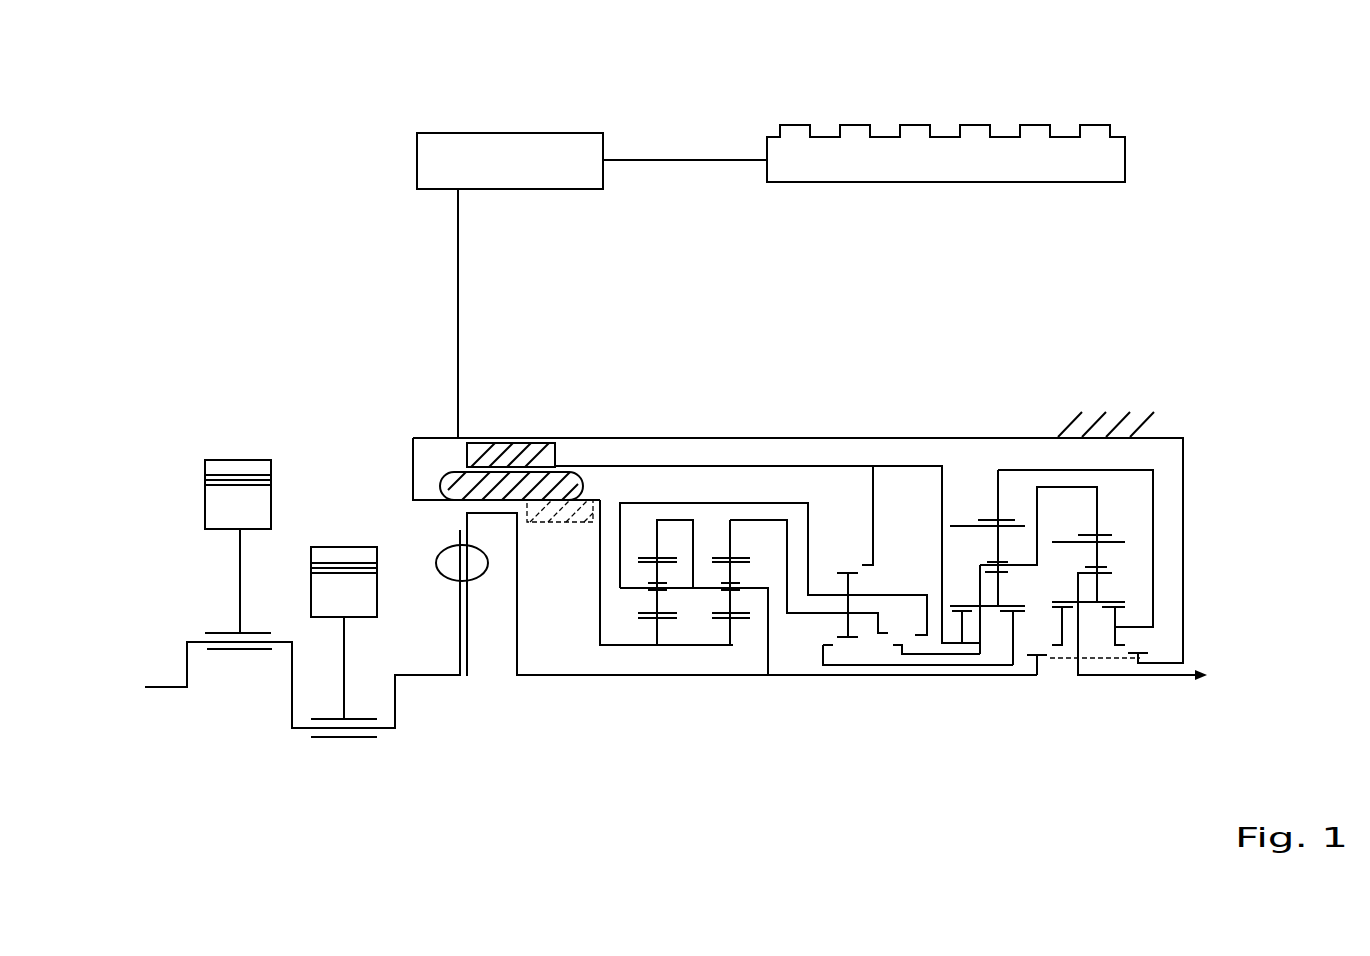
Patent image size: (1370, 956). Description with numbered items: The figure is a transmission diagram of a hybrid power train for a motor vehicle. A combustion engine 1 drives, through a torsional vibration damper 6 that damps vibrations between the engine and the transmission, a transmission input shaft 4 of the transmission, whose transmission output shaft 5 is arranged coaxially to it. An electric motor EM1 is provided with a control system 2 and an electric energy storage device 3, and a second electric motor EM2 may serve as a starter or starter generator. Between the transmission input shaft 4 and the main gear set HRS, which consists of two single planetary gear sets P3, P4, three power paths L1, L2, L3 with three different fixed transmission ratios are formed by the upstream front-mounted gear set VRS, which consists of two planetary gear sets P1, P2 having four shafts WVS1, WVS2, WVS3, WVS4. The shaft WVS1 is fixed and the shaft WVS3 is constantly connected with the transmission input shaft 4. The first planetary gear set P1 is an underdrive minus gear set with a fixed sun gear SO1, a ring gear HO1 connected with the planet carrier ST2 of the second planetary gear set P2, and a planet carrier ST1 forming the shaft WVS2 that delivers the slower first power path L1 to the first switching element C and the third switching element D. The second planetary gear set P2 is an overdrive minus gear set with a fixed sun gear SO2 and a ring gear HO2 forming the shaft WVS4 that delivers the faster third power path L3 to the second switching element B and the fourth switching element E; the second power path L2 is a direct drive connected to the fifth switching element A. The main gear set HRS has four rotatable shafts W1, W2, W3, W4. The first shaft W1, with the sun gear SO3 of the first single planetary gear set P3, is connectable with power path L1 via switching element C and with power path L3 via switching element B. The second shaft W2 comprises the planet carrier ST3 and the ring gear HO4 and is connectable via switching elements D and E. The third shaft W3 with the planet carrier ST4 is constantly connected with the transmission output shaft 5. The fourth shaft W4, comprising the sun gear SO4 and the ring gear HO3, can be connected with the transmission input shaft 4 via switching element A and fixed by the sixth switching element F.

The combustion engine 1 is at (283, 432).
The control system 2 is at (430, 165).
The electric energy storage device 3 is at (970, 165).
The transmission input shaft 4 is at (517, 678).
The transmission output shaft 5 is at (1178, 679).
The torsional vibration damper 6 is at (448, 567).
The electric motor EM1 is at (497, 423).
The second electric motor EM2 is at (562, 537).
The ring gear HO1 is at (642, 553).
The ring gear HO2 is at (720, 552).
The ring gear HO3 is at (1007, 513).
The ring gear HO4 is at (1103, 527).
The shaft of the front-mounted gear set WVS1 is at (600, 602).
The shaft of the first planetary gear set WVS2 is at (778, 500).
The shaft of the front-mounted gear set WVS3 is at (766, 652).
The shaft of the second planetary gear set WVS4 is at (860, 617).
The planet carrier ST1 is at (645, 592).
The planet carrier ST2 is at (715, 593).
The planet carrier ST3 is at (980, 563).
The planet carrier ST4 is at (1082, 563).
The sun gear SO1 is at (643, 621).
The sun gear SO2 is at (740, 622).
The sun gear SO3 is at (957, 613).
The sun gear SO4 is at (1120, 608).
The first shaft W1 is at (973, 618).
The second shaft W2 is at (1097, 502).
The third shaft W3 is at (1112, 573).
The fourth shaft W4 is at (1115, 630).
The fifth switching element A is at (1043, 659).
The second switching element B is at (843, 638).
The first switching element C is at (843, 572).
The third switching element D is at (918, 622).
The fourth switching element E is at (882, 618).
The sixth switching element F is at (1145, 662).
The first power path L1 is at (768, 487).
The second power path L2 is at (803, 665).
The third power path L3 is at (778, 530).
The front-mounted gear set VRS is at (753, 310).
The main gear set HRS is at (1118, 310).
The first planetary gear set P1 is at (655, 402).
The second planetary gear set P2 is at (729, 402).
The first single planetary gear set P3 is at (995, 399).
The second single planetary gear set P4 is at (1096, 399).